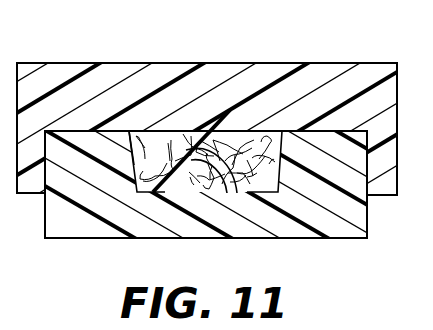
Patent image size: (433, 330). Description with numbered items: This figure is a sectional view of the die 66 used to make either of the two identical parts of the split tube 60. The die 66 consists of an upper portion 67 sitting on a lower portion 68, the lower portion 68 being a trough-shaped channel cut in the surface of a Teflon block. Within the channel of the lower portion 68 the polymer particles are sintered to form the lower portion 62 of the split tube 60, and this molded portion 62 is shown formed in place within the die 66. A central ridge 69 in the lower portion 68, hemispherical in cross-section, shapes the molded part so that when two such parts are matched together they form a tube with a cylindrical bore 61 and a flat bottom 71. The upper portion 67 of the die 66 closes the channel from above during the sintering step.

The third embodiment 60 is at (197, 122).
The cylindrical bore 61 is at (207, 148).
The lower portion 62 is at (151, 142).
The die 66 is at (216, 165).
The upper portion 67 is at (348, 82).
The lower portion 68 is at (336, 228).
The central ridge 69 is at (225, 178).
The bottom 71 is at (140, 132).